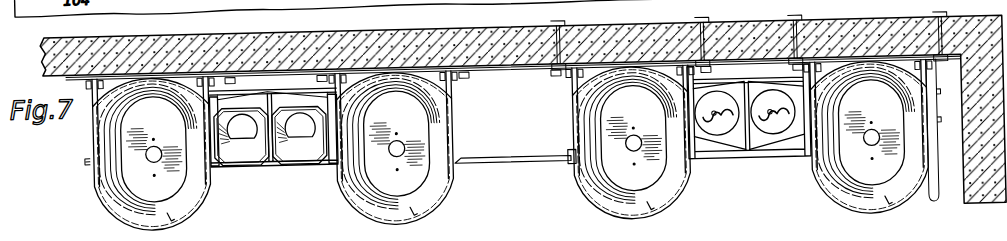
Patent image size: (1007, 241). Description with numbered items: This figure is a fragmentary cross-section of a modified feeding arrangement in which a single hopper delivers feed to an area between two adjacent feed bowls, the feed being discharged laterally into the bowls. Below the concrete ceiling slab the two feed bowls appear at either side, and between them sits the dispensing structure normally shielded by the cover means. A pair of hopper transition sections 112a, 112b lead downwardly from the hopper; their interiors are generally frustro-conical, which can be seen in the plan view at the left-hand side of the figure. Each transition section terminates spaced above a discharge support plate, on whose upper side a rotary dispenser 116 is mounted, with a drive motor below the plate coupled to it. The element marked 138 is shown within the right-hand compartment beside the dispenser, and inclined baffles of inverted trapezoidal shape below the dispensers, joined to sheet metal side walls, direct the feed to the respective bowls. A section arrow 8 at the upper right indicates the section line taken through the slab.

The hopper transition section 112a is at (227, 154).
The hopper transition section 112b is at (302, 156).
The rotary dispenser 116 is at (730, 121).
The hook 138 is at (770, 132).
The section line for FIG. 8 is at (928, 26).